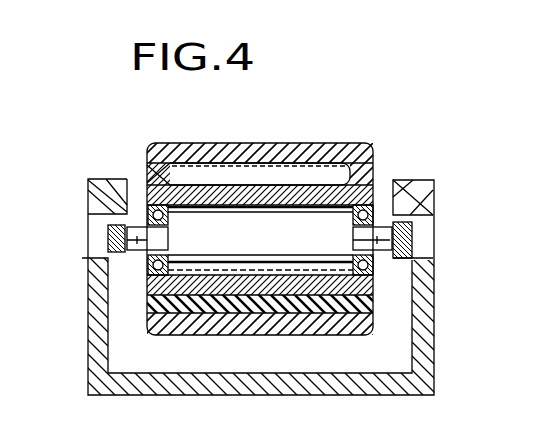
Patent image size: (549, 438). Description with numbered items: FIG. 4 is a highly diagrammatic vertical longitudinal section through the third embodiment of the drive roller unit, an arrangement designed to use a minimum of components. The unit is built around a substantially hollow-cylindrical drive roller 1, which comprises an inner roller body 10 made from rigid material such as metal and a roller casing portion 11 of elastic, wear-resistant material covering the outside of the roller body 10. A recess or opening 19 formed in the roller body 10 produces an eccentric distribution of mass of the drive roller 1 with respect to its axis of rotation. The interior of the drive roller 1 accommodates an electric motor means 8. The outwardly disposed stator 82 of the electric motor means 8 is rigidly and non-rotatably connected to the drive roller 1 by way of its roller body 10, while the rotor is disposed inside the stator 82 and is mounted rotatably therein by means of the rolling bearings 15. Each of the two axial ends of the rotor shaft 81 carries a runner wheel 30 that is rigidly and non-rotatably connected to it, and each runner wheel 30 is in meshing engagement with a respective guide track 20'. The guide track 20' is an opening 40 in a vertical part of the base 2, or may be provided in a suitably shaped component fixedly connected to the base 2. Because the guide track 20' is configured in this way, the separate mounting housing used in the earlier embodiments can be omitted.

The drive roller 1 is at (364, 145).
The base 2 is at (428, 320).
The electric motor means 8 is at (362, 173).
The roller body 10 is at (165, 143).
The roller casing portion 11 is at (213, 143).
The rolling bearings 15 is at (146, 207).
The recess or opening 19 is at (308, 173).
The guide track 20' is at (271, 239).
The runner wheel 30 is at (112, 178).
The opening 40 is at (115, 223).
The rotor shaft 81 is at (130, 260).
The stator 82 is at (160, 340).